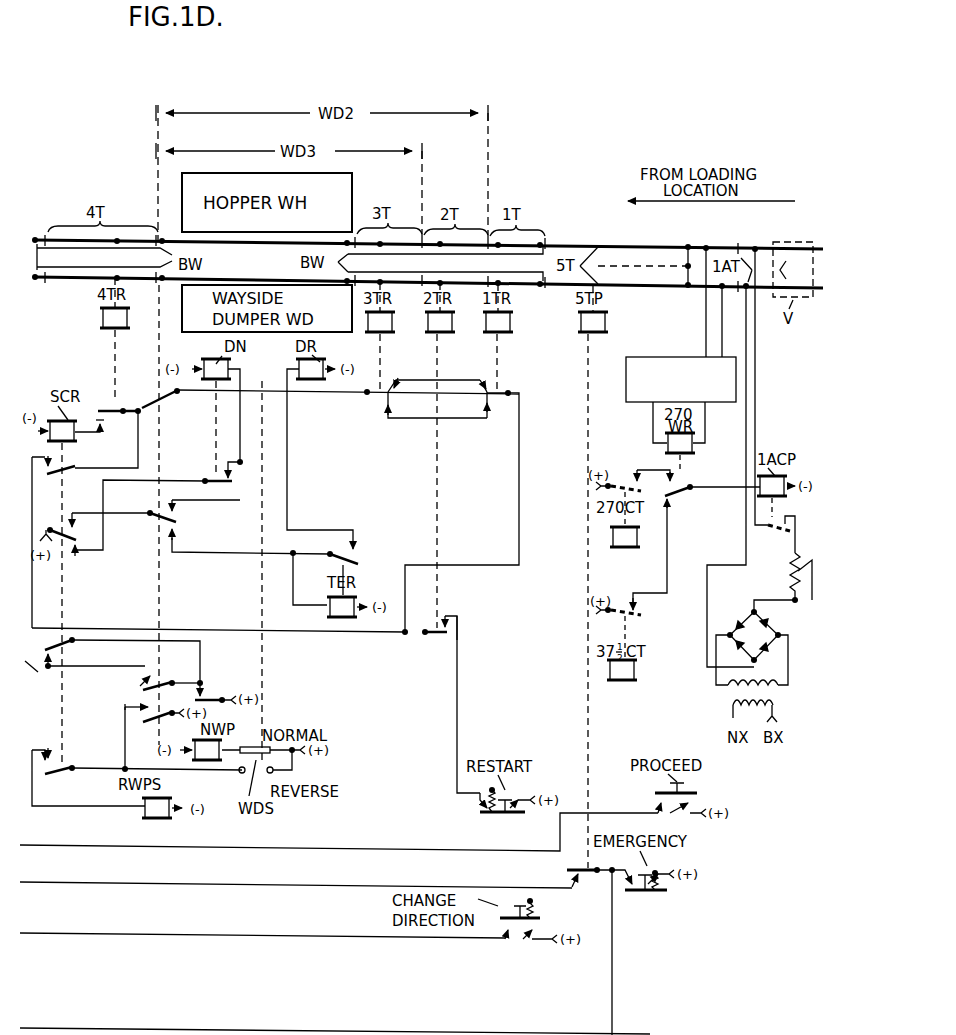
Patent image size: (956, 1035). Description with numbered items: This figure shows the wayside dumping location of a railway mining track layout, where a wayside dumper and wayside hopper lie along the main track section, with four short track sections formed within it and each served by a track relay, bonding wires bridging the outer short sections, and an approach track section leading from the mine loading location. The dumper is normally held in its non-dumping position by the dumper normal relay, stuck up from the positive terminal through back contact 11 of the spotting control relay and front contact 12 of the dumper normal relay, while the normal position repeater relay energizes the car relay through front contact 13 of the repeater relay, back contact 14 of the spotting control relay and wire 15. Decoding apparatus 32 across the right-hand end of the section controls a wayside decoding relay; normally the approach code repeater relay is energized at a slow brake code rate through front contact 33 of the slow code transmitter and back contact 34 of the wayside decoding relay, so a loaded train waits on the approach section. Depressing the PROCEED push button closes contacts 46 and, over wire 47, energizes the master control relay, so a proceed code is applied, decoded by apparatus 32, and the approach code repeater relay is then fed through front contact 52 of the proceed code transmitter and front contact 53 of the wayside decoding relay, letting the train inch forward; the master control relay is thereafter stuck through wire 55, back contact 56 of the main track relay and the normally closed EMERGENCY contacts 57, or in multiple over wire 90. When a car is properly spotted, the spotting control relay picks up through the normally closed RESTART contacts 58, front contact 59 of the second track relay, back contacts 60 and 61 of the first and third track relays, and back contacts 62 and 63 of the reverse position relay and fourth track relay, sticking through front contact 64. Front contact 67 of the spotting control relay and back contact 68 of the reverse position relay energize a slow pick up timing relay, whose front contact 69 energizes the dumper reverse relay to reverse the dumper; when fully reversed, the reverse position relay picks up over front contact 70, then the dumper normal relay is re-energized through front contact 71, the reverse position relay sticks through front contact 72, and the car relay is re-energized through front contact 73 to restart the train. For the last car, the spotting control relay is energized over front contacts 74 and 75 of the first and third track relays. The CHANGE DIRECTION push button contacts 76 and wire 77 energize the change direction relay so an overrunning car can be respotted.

The back contact of relay SCR 11 is at (78, 552).
The front contact of relay DN 12 is at (222, 470).
The front contact of relay NWP 13 is at (203, 691).
The back contact of relay SCR 14 is at (60, 651).
The wire 15 is at (83, 677).
The decoding apparatus 32 is at (640, 357).
The front contact of code transmitter 37½CT 33 is at (638, 604).
The back contact of relay 270WR 34 is at (669, 500).
The contacts of the PROCEED push button 46 is at (686, 812).
The wire 47 is at (76, 845).
The front contact of code transmitter 270T 52 is at (636, 474).
The front contact of relay 270WR 53 is at (674, 480).
The wire 55 is at (76, 882).
The back contact of relay 5TP 56 is at (576, 877).
The normally closed contacts of the EMERGENCY push button 57 is at (658, 893).
The normally closed contacts of the RESTART push button 58 is at (512, 826).
The front contact of track relay 2TR 59 is at (446, 616).
The back contact of track relay 1TR 60 is at (490, 405).
The back contact of track relay 3TR 61 is at (392, 407).
The back contact of relay RWPS 62 is at (148, 405).
The back contact of relay 4TR 63 is at (100, 431).
The front contact of relay SCR 64 is at (62, 470).
The front contact of relay SCR 67 is at (72, 512).
The back contact of relay RWPS 68 is at (174, 535).
The front contact of timing relay TER 69 is at (356, 543).
The front contact of relay SCR 70 is at (55, 756).
The front contact of relay RWPS 71 is at (173, 507).
The front contact of relay RWPS 72 is at (125, 708).
The front contact of relay RWPS 73 is at (138, 680).
The front contact of relay 1TR 74 is at (485, 382).
The front contact of relay 3TR 75 is at (398, 380).
The contacts of the CHANGE DIRECTION push button 76 is at (524, 950).
The wire 77 is at (76, 934).
The wire 90 is at (60, 1028).